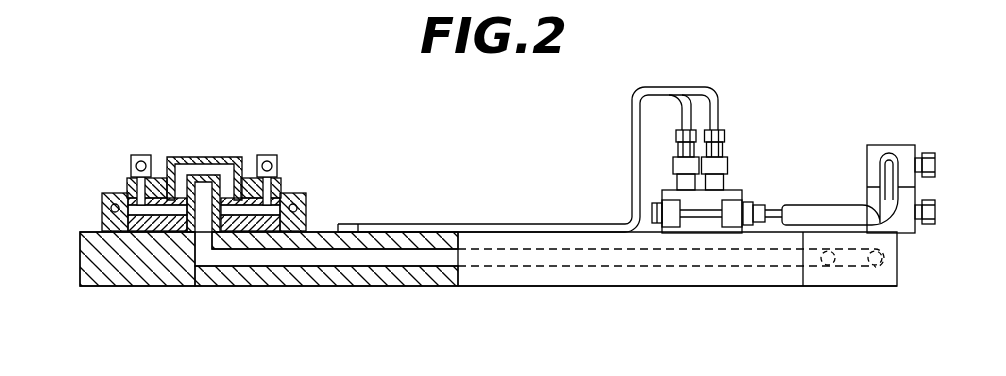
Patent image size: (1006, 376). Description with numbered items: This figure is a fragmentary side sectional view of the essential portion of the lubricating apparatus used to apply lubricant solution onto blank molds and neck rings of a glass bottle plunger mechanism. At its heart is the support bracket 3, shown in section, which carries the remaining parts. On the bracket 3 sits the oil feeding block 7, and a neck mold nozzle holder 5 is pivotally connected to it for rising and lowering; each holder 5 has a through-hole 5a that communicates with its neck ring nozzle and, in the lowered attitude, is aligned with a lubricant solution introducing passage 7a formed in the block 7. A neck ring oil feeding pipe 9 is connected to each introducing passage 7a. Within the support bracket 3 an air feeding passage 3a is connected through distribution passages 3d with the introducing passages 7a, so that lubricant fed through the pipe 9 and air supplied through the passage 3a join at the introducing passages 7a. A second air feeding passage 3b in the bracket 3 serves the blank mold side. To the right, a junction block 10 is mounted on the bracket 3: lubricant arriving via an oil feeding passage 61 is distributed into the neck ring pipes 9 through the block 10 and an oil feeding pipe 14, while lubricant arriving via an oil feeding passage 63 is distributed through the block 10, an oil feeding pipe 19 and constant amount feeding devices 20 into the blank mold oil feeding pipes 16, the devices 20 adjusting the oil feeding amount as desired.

The support bracket 3 is at (493, 287).
The air feeding passage 3a is at (248, 258).
The air feeding passage 3b is at (722, 262).
The distribution passages 3d is at (180, 190).
The neck mold nozzle holder 5 is at (105, 197).
The through-hole 5a is at (118, 209).
The oil feeding block 7 is at (203, 157).
The lubricant solution introducing passage 7a is at (138, 190).
The neck ring oil feeding pipe 9 is at (142, 155).
The junction block 10 is at (907, 150).
The oil feeding pipe 14 is at (893, 220).
The blank mold oil feeding pipe 16 is at (632, 124).
The oil feeding pipe 19 is at (888, 168).
The constant amount feeding device 20 is at (683, 183).
The oil feeding passage 61 is at (950, 216).
The oil feeding passage 63 is at (950, 169).